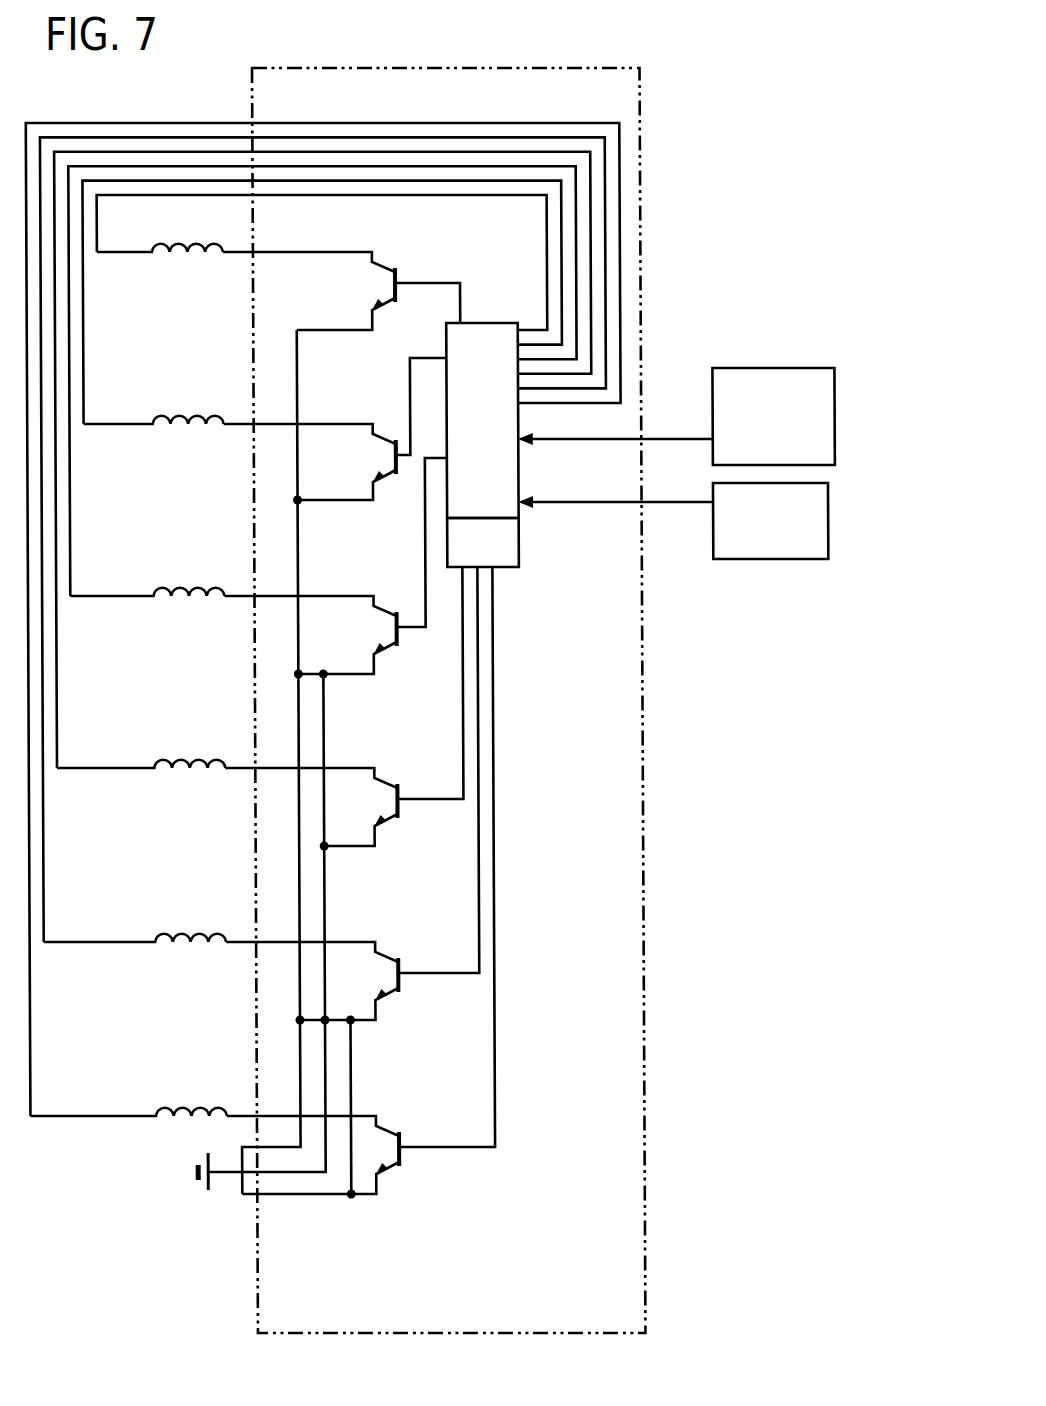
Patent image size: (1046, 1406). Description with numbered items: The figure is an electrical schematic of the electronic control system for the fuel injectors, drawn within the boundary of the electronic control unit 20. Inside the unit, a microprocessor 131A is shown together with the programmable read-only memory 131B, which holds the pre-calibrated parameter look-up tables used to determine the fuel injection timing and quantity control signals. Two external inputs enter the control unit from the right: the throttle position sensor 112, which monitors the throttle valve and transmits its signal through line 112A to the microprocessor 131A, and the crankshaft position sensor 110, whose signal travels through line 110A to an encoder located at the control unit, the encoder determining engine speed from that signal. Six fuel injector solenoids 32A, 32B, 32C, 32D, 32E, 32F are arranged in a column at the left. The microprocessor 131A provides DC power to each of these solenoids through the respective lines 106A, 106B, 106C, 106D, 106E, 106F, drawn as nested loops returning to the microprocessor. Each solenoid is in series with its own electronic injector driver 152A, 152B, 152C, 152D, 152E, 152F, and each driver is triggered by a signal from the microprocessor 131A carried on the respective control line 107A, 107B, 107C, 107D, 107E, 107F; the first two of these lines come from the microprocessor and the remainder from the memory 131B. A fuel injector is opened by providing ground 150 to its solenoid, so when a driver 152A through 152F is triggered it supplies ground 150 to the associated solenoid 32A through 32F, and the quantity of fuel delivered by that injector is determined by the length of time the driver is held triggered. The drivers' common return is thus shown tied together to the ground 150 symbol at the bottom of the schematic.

The electronic control unit 20 is at (543, 68).
The fuel injector solenoid 32A is at (182, 258).
The fuel injector solenoid 32B is at (182, 430).
The fuel injector solenoid 32C is at (182, 602).
The fuel injector solenoid 32D is at (182, 774).
The fuel injector solenoid 32E is at (182, 948).
The fuel injector solenoid 32F is at (172, 1122).
The DC power line 106A is at (99, 210).
The DC power line 106B is at (85, 365).
The DC power line 106C is at (71, 490).
The DC power line 106D is at (57, 675).
The DC power line 106E is at (43, 838).
The DC power line 106F is at (31, 1005).
The driver control line 107A is at (430, 283).
The driver control line 107B is at (411, 368).
The driver control line 107C is at (424, 530).
The driver control line 107D is at (463, 708).
The driver control line 107E is at (478, 882).
The driver control line 107F is at (493, 1063).
The electronic injector driver 152A is at (382, 283).
The electronic injector driver 152B is at (380, 455).
The electronic injector driver 152C is at (398, 642).
The electronic injector driver 152D is at (398, 814).
The electronic injector driver 152E is at (398, 988).
The electronic injector driver 152F is at (400, 1160).
The microprocessor 131A is at (476, 322).
The programmable read-only memory 131B is at (509, 568).
The throttle position sensor 112 is at (756, 368).
The throttle position signal line 112A is at (661, 438).
The crankshaft position sensor 110 is at (748, 560).
The crankshaft position signal line 110A is at (576, 502).
The ground 150 is at (196, 1190).